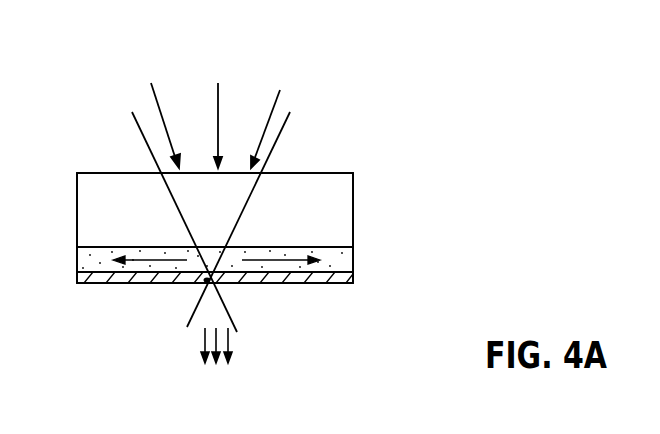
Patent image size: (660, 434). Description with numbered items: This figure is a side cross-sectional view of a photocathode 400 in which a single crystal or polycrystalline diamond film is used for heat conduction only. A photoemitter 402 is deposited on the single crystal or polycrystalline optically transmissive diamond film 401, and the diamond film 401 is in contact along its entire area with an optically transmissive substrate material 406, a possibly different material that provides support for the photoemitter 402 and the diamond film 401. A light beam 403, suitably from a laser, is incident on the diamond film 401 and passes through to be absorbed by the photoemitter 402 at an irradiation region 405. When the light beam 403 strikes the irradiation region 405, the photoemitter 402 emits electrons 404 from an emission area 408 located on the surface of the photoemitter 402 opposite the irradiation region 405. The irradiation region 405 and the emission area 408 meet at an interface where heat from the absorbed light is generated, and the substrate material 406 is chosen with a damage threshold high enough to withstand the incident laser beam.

The photocathode 400 is at (425, 94).
The optically transmissive diamond film 401 is at (353, 250).
The photoemitter 402 is at (353, 273).
The light beam 403 is at (283, 73).
The electrons 404 is at (238, 364).
The irradiation region 405 is at (202, 284).
The optically transmissive substrate material 406 is at (353, 203).
The emission area 408 is at (212, 285).